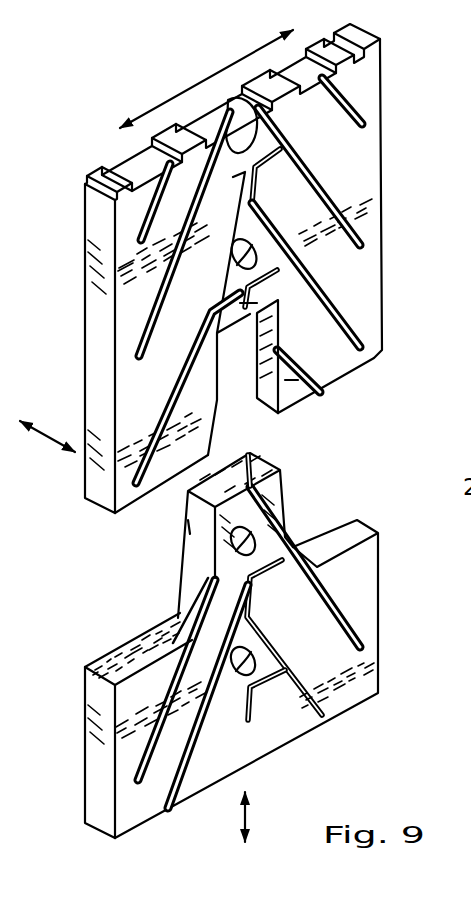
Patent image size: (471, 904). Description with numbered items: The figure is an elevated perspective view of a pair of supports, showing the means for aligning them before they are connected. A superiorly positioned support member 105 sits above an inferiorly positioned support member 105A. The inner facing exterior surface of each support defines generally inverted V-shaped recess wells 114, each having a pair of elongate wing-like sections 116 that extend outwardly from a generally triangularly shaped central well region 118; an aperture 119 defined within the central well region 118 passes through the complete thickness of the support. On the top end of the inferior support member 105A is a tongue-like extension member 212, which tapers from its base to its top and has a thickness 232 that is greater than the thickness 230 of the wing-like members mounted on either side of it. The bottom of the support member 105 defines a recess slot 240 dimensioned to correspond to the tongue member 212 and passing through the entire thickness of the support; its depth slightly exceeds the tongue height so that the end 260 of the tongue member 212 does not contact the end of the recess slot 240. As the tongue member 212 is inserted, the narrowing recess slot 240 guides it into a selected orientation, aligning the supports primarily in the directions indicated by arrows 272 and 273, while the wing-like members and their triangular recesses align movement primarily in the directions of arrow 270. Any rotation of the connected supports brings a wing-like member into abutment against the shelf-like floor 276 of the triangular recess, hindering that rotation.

The support member 105 is at (368, 170).
The inferior support member 105A is at (378, 667).
The recess well 114 is at (345, 320).
The wing-like section 116 is at (150, 245).
The central well region 118 is at (256, 250).
The aperture 119 is at (270, 222).
The tongue-like extension member 212 is at (270, 502).
The thickness of wing-like member 230 is at (193, 607).
The thickness of tongue member 232 is at (190, 528).
The recess slot 240 is at (233, 358).
The end of tongue 260 is at (253, 468).
The arrow 270 is at (48, 428).
The arrow 272 is at (213, 75).
The arrow 273 is at (248, 820).
The shelf-like floor 276 is at (198, 447).